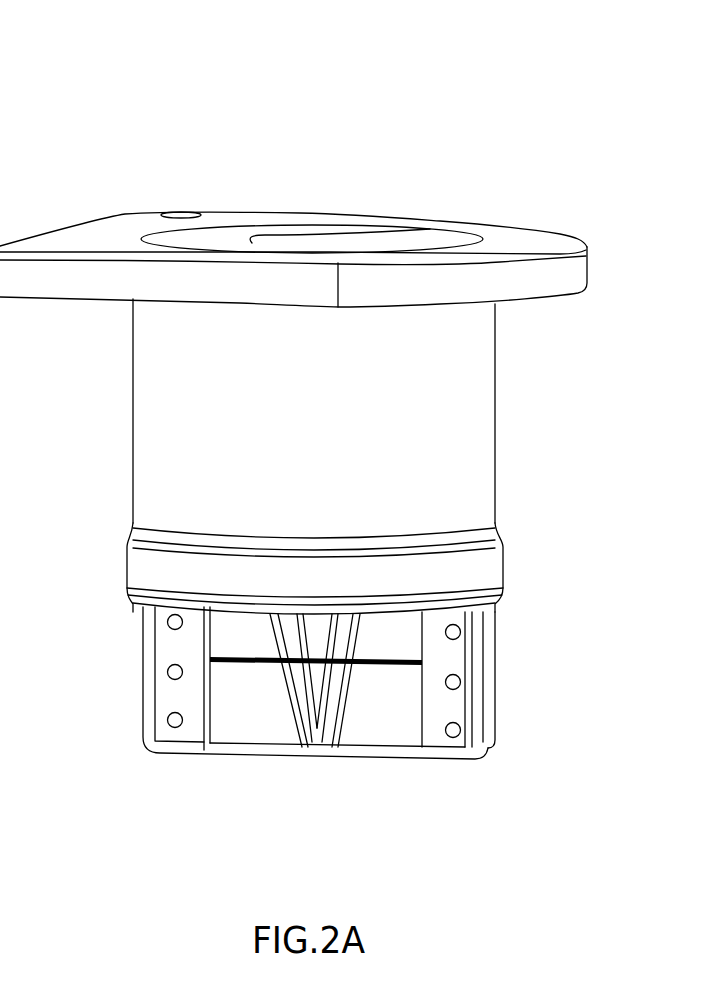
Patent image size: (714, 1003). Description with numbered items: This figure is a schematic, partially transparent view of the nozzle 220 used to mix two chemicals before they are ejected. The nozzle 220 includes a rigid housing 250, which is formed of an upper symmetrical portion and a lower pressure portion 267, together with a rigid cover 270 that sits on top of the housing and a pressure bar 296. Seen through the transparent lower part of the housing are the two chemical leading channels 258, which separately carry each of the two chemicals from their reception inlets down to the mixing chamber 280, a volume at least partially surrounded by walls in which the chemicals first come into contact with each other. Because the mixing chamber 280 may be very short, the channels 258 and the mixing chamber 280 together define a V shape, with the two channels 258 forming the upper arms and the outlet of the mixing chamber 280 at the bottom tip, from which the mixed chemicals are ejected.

The nozzle 220 is at (113, 103).
The rigid housing 250 is at (183, 427).
The rigid cover 270 is at (360, 243).
The chemical leading channels 258 is at (300, 703).
The mixing chamber 280 is at (320, 720).
The lower pressure portion 267 is at (490, 682).
The pressure bar 296 is at (488, 748).